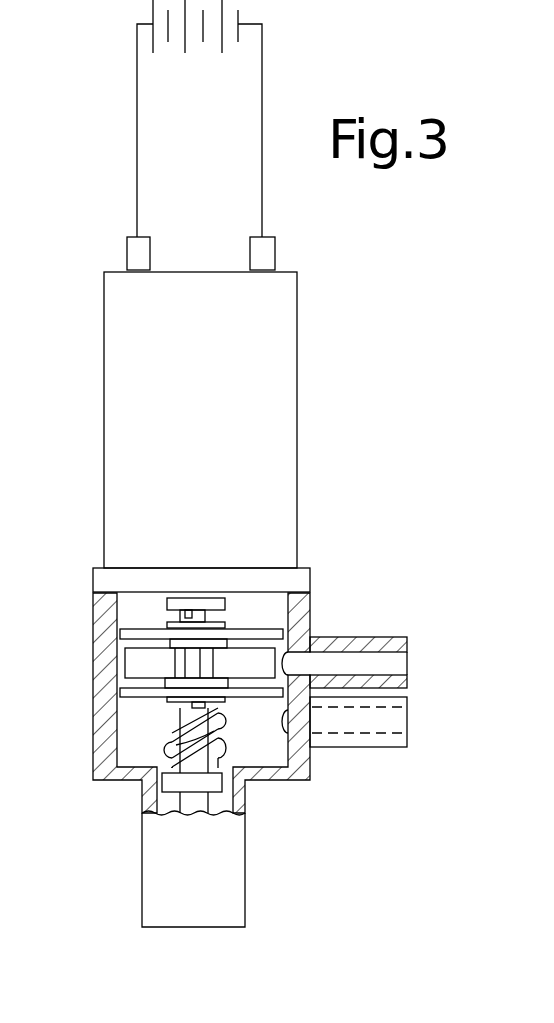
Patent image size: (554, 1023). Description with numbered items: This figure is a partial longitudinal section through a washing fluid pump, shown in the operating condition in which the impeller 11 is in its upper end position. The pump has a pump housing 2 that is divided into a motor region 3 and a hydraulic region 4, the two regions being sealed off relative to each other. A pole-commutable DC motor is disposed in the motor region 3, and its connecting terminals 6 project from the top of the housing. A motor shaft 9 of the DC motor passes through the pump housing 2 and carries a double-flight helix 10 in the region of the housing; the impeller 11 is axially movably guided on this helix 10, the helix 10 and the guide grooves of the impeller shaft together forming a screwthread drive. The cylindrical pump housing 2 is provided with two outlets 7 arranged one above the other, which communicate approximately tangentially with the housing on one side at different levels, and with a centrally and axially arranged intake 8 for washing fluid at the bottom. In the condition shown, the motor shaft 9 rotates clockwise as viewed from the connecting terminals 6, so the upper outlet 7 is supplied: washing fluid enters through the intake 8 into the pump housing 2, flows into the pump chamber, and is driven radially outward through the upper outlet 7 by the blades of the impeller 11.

The pump housing 2 is at (92, 763).
The motor region 3 is at (267, 427).
The hydraulic region 4 is at (300, 608).
The connecting terminals 6 is at (137, 128).
The outlets 7 is at (385, 641).
The intake 8 is at (173, 927).
The motor shaft 9 is at (197, 807).
The double-flight helix 10 is at (207, 737).
The impeller 11 is at (128, 662).